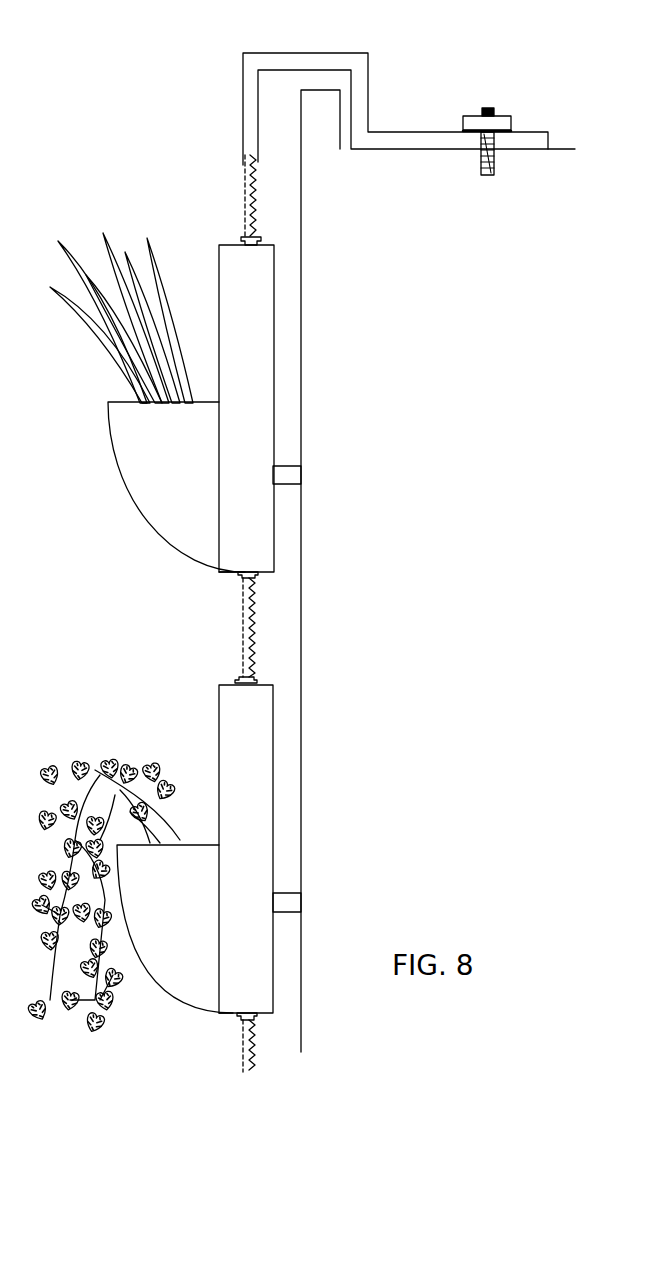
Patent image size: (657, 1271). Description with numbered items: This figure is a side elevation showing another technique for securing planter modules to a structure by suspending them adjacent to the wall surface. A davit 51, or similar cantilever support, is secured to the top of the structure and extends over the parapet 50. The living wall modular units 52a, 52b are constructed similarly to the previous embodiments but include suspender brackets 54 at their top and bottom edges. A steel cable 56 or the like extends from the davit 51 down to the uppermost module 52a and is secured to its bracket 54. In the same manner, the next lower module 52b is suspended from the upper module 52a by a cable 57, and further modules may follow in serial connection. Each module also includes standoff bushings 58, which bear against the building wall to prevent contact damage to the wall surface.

The parapet 50 is at (318, 115).
The davit 51 is at (368, 68).
The uppermost living wall modular unit 52a is at (238, 440).
The next lower living wall modular unit 52b is at (250, 800).
The suspender bracket 54 is at (262, 240).
The steel cable 56 is at (238, 202).
The cable 57 is at (232, 632).
The standoff bushing 58 is at (293, 476).